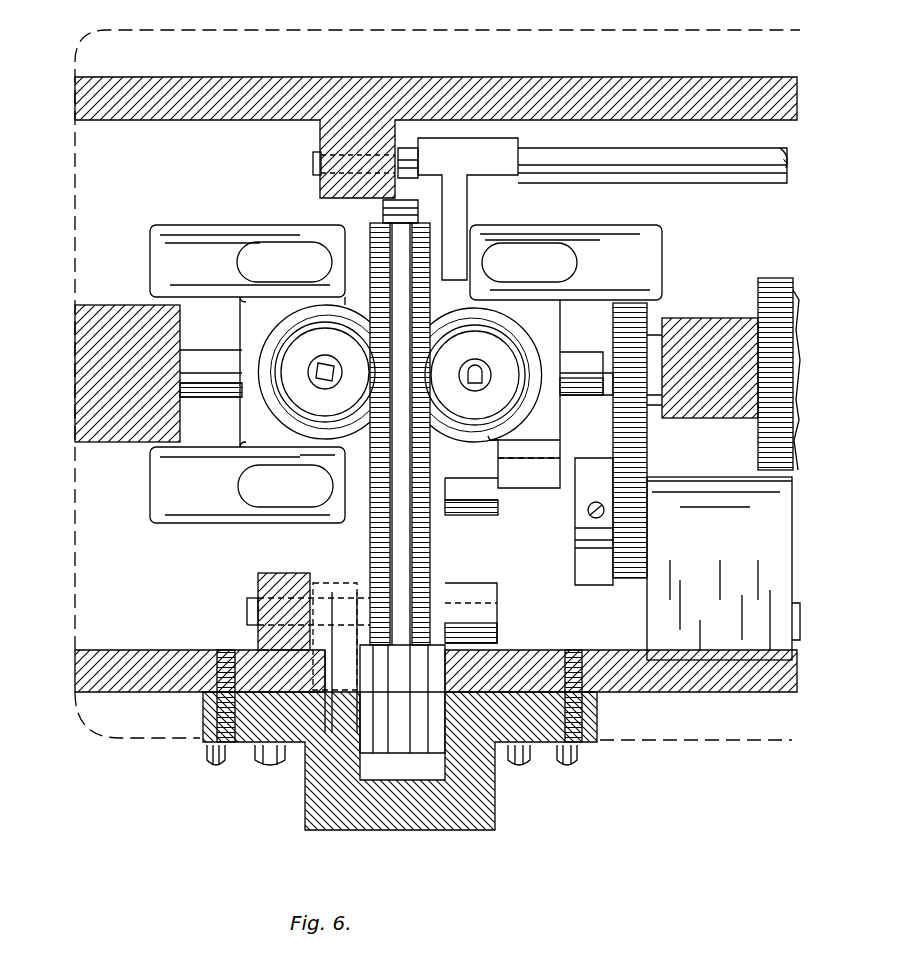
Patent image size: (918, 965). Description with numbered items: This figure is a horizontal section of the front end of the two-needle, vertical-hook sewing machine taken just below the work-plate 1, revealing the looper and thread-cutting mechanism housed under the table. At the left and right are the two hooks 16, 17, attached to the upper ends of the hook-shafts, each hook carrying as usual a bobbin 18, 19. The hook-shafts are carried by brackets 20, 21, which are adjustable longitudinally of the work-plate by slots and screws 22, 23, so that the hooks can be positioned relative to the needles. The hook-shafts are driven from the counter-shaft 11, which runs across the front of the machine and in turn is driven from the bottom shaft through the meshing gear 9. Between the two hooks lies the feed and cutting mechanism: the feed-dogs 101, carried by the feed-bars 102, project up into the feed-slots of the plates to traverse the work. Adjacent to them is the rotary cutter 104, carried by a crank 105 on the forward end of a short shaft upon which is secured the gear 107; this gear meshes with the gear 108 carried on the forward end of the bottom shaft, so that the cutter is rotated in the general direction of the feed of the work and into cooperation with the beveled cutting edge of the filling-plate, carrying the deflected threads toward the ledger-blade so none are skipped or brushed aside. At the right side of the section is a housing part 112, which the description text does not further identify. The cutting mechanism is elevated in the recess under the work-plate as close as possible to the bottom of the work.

The work-plate 1 is at (75, 598).
The gear 9 is at (775, 278).
The counter-shaft 11 is at (211, 360).
The hook 16 is at (490, 322).
The hook 17 is at (300, 326).
The bobbin 18 is at (475, 375).
The bobbin 19 is at (325, 372).
The bracket 20 is at (592, 232).
The bracket 21 is at (200, 233).
The slots and screws 22 is at (578, 262).
The slots and screws 23 is at (238, 256).
The feed-dogs 101 is at (400, 450).
The feed-bars 102 is at (378, 572).
The rotary cutter 104 is at (438, 590).
The crank 105 is at (445, 503).
The gear 107 is at (648, 523).
The gear 108 is at (650, 420).
The housing block 112 is at (790, 497).